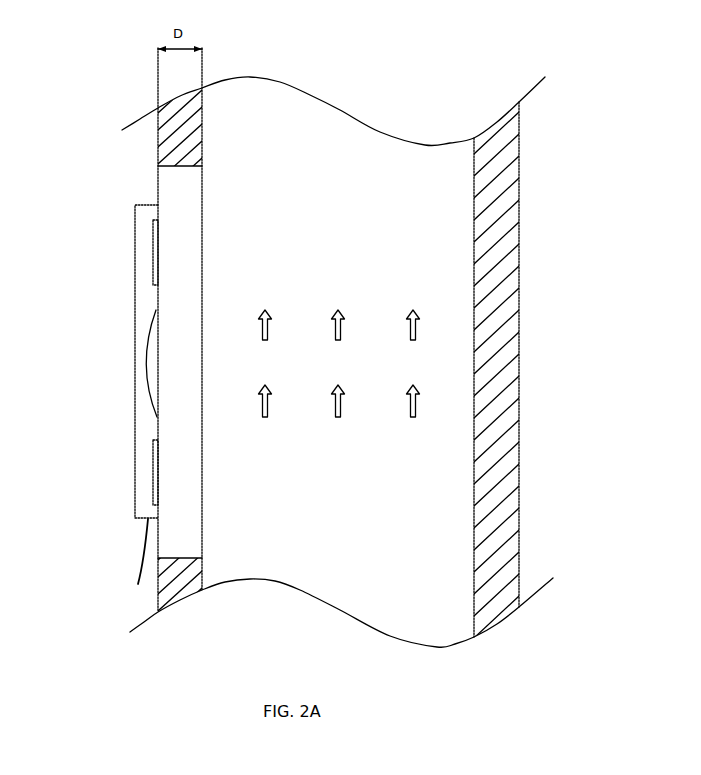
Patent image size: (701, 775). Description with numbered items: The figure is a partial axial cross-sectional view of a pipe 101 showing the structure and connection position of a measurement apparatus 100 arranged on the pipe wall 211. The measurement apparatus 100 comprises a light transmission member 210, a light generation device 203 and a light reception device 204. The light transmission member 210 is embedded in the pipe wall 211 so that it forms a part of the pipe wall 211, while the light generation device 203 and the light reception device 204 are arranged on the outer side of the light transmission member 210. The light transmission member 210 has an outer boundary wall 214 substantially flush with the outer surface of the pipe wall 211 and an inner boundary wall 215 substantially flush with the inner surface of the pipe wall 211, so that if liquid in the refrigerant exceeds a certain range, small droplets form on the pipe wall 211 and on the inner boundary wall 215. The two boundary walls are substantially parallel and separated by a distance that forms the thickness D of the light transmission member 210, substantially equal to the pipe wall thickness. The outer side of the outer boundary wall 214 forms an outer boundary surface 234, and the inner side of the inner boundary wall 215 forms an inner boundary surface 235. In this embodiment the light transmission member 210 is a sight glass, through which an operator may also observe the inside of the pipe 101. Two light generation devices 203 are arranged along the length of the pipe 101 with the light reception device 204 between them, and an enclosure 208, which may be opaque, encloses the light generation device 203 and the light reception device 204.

The measurement apparatus 100 is at (103, 131).
The pipe 101 is at (293, 567).
The light generation device 203 is at (155, 255).
The light reception device 204 is at (152, 358).
The enclosure 208 is at (143, 300).
The light transmission member 210 is at (173, 174).
The pipe wall 211 is at (503, 209).
The outer boundary wall 214 is at (158, 195).
The inner boundary wall 215 is at (200, 223).
The outer boundary surface 234 is at (158, 540).
The inner boundary surface 235 is at (200, 517).